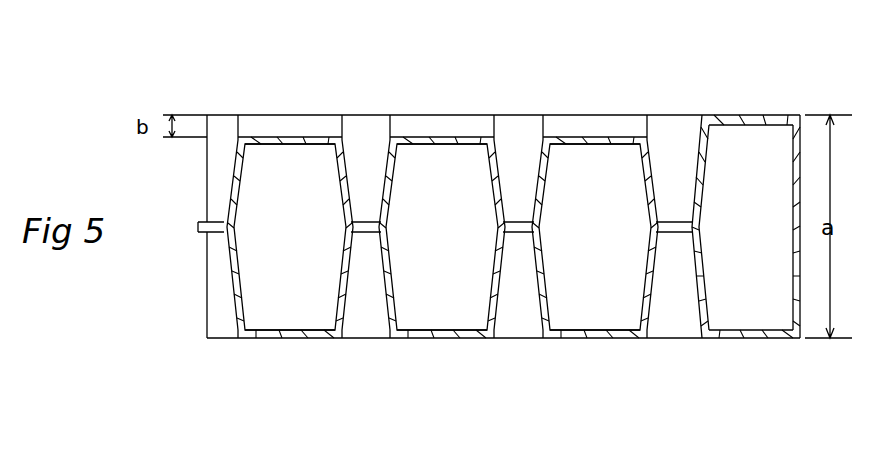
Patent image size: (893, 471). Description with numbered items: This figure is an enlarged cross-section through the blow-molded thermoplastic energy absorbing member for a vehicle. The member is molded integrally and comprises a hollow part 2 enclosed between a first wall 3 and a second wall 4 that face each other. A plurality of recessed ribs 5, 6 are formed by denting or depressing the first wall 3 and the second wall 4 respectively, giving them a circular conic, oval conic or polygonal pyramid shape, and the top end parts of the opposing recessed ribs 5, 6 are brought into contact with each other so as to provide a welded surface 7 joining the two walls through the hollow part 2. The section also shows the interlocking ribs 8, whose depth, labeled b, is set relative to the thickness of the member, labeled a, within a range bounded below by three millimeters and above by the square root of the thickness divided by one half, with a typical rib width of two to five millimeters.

The hollow part 2 is at (283, 183).
The first wall 3 is at (741, 117).
The second wall 4 is at (733, 340).
The recessed rib 5 is at (519, 167).
The recessed rib 6 is at (518, 300).
The welded surface 7 is at (368, 220).
The interlocking ribs 8 is at (450, 122).